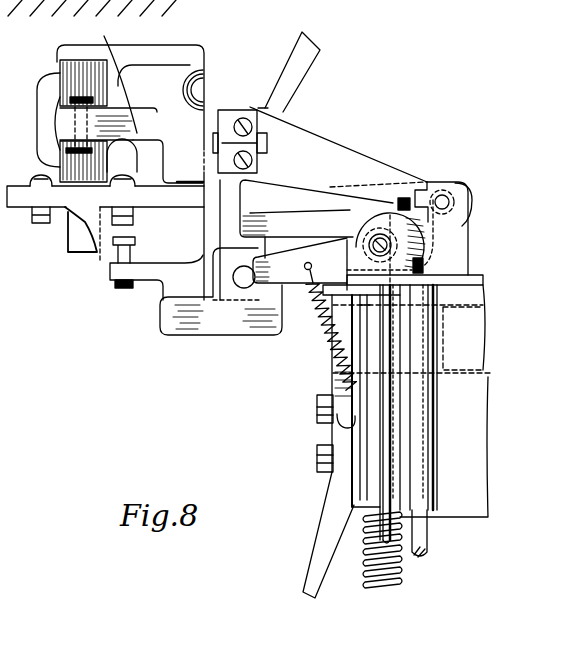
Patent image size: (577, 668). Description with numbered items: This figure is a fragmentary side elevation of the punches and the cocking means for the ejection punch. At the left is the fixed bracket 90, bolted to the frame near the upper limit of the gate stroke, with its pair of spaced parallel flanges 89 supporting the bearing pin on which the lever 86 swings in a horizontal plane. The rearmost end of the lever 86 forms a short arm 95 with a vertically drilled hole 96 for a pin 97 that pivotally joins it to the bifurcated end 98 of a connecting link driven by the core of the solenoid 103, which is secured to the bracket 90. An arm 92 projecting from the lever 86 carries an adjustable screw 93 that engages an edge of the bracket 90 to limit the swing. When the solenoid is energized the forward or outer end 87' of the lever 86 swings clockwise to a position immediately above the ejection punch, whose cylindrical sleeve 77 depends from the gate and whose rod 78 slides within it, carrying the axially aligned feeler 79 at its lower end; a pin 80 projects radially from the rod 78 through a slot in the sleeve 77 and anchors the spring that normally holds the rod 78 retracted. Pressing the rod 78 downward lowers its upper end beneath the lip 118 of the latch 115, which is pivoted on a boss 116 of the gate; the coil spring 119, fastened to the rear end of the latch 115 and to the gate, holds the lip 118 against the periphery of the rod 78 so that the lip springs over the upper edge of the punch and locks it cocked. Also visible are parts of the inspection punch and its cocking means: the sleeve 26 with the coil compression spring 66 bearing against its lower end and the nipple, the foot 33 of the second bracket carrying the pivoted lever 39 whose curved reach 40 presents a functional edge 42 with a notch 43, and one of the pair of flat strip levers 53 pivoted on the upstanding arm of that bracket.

The sleeve 26 is at (375, 486).
The foot 33 is at (256, 336).
The pivoted member or lever 39 is at (216, 336).
The reach 40 is at (271, 80).
The functional edge 42 is at (283, 97).
The notch 43 is at (232, 200).
The lever 53 is at (318, 222).
The coil compression spring 66 is at (368, 571).
The cylindrical sleeve 77 is at (438, 445).
The rod 78 is at (475, 194).
The feeler 79 is at (17, 516).
The pin 80 is at (103, 256).
The lever 86 is at (337, 150).
The forward or outer end 87' is at (430, 212).
The flanges 89 is at (158, 63).
The bracket 90 is at (80, 237).
The arm 92 is at (225, 127).
The adjustable screw 93 is at (262, 144).
The short arm 95 is at (119, 75).
The hole 96 is at (75, 130).
The pin 97 is at (62, 96).
The bifurcated end 98 is at (66, 100).
The solenoid 103 is at (58, 78).
The latch 115 is at (437, 238).
The boss 116 is at (430, 257).
The lip 118 is at (432, 183).
The coil spring 119 is at (322, 345).